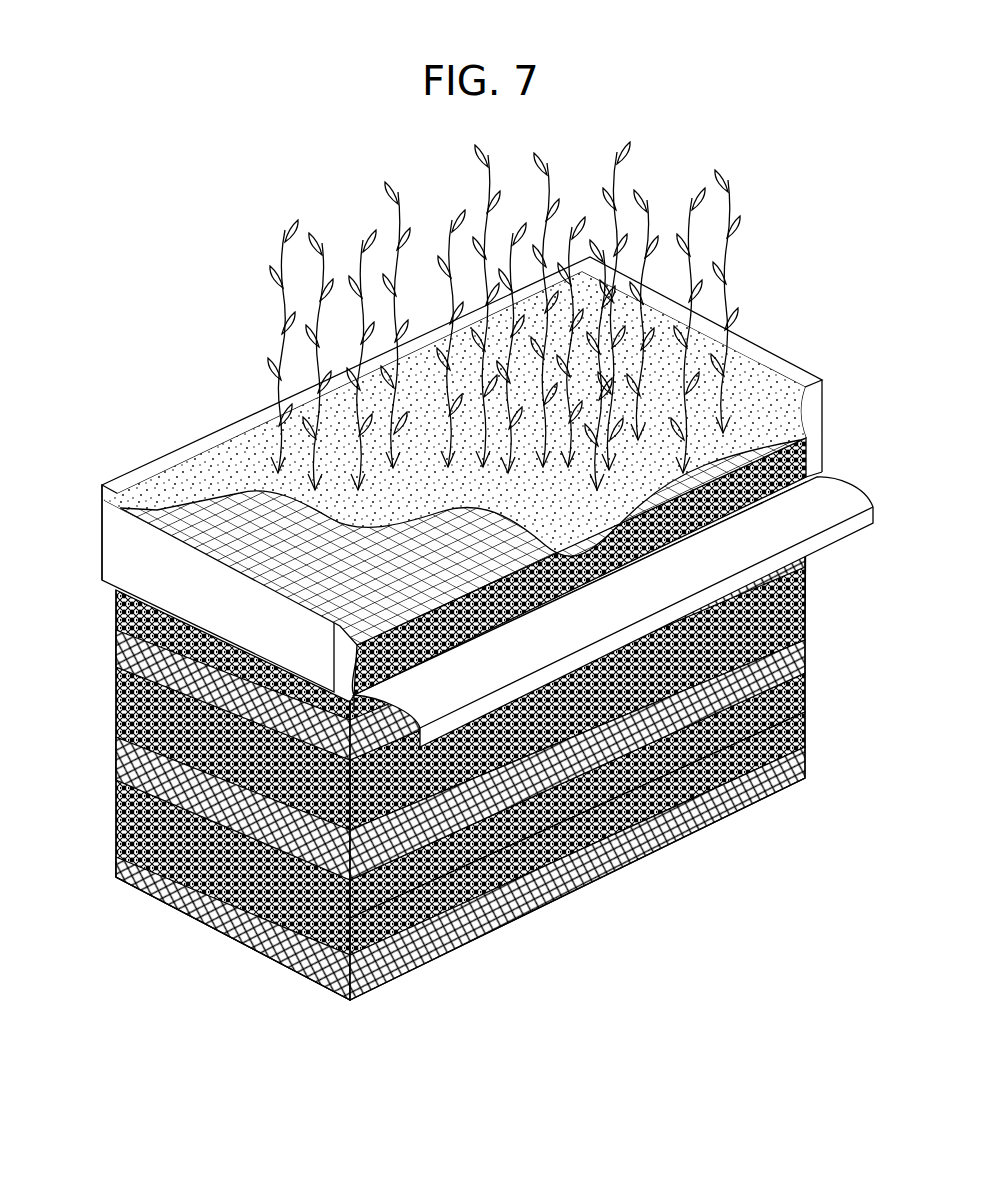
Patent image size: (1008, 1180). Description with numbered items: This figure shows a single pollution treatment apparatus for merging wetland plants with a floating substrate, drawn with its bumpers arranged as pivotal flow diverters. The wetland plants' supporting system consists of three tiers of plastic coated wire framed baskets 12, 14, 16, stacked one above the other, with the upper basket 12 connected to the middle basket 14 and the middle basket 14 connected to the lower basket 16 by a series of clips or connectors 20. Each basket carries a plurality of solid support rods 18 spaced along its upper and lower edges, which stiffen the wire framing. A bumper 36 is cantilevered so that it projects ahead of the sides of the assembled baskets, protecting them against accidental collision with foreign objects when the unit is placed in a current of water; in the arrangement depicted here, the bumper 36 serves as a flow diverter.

The basket 12 is at (808, 438).
The basket 14 is at (812, 602).
The basket 16 is at (810, 737).
The solid support rods 18 is at (810, 655).
The clips or connectors 20 is at (810, 690).
The bumper 36 is at (118, 543).